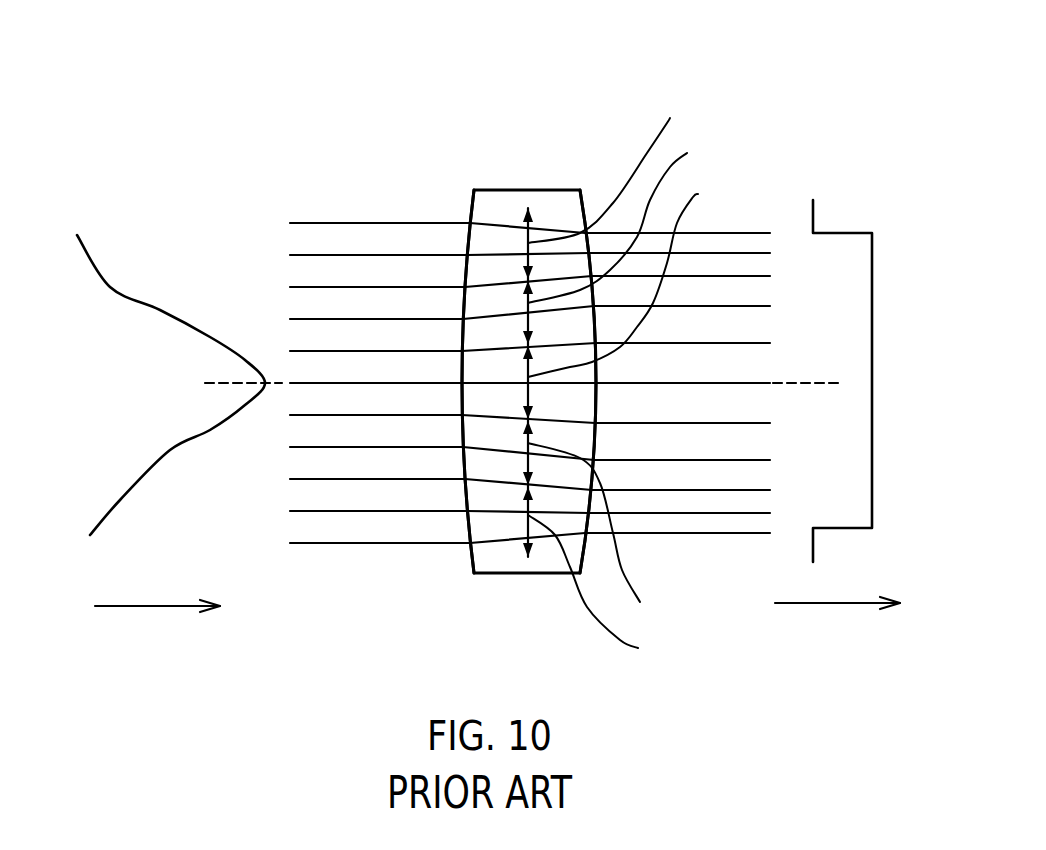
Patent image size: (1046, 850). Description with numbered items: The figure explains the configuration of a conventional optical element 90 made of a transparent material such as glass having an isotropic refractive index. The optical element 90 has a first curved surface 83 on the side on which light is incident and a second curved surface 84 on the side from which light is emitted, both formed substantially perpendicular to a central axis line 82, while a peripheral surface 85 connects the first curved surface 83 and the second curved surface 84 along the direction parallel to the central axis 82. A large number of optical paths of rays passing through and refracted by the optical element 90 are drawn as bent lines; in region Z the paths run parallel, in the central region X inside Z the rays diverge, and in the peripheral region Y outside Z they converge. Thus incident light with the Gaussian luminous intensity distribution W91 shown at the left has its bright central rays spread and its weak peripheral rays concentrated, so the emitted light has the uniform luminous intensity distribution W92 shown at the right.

The optical element 90 is at (597, 97).
The peripheral surface 85 is at (530, 190).
The first curved surface 83 is at (470, 212).
The second curved surface 84 is at (582, 203).
The central axis line 82 is at (812, 380).
The Gaussian luminous intensity distribution W91 is at (157, 310).
The uniform luminous intensity distribution W92 is at (872, 288).